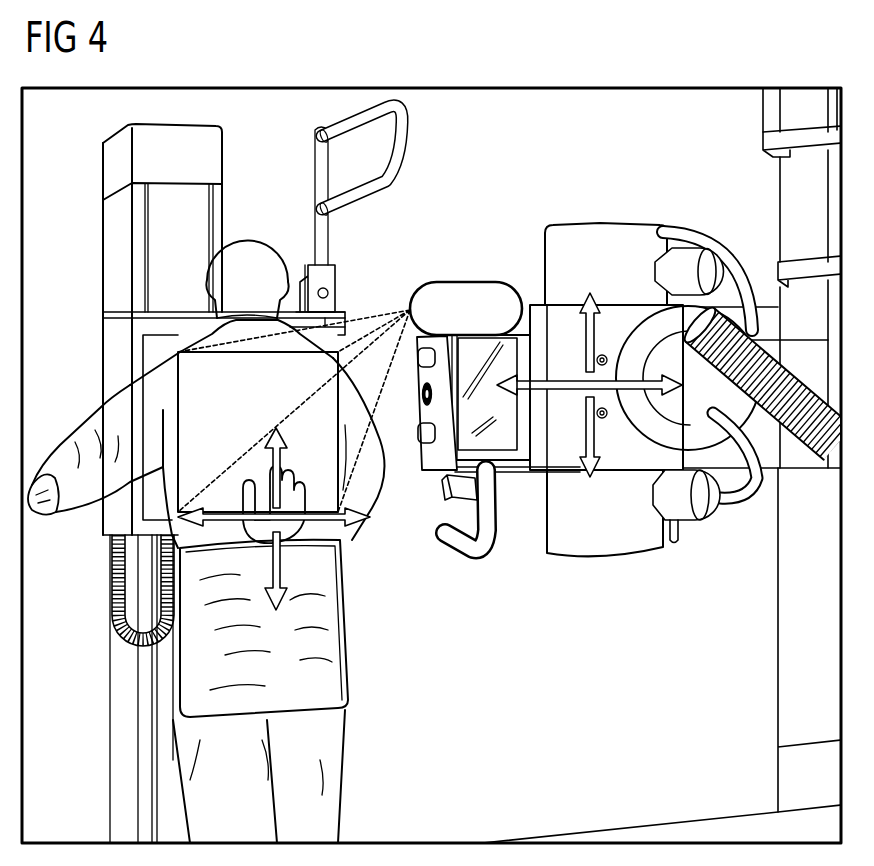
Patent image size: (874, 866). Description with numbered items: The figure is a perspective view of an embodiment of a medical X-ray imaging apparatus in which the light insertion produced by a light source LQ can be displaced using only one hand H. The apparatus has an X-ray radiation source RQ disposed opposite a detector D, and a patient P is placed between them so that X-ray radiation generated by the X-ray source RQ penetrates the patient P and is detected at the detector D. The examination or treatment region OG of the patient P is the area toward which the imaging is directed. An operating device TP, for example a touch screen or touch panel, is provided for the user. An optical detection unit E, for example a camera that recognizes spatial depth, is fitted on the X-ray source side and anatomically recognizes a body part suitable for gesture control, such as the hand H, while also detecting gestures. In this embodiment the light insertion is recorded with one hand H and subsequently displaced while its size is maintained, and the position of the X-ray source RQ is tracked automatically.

The detector D is at (170, 326).
The examination or treatment region OG is at (195, 378).
The patient P is at (128, 398).
The light source LQ is at (350, 397).
The operating device TP is at (503, 357).
The X-ray radiation source RQ is at (422, 403).
The optical detection unit E is at (468, 490).
The hand H is at (295, 535).